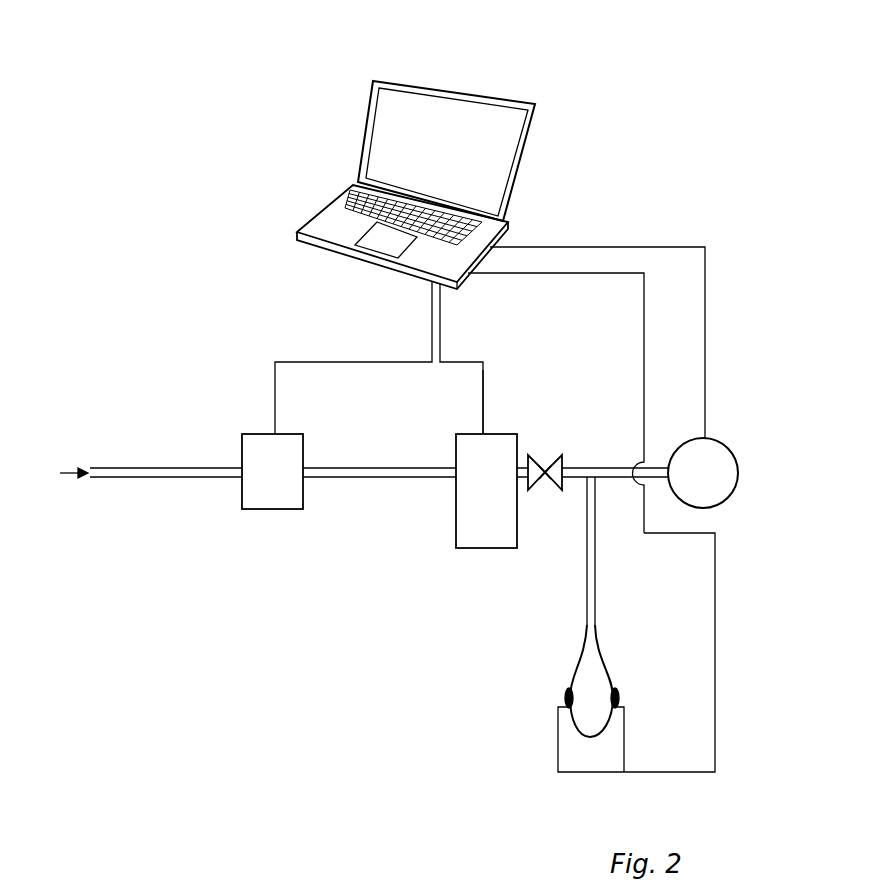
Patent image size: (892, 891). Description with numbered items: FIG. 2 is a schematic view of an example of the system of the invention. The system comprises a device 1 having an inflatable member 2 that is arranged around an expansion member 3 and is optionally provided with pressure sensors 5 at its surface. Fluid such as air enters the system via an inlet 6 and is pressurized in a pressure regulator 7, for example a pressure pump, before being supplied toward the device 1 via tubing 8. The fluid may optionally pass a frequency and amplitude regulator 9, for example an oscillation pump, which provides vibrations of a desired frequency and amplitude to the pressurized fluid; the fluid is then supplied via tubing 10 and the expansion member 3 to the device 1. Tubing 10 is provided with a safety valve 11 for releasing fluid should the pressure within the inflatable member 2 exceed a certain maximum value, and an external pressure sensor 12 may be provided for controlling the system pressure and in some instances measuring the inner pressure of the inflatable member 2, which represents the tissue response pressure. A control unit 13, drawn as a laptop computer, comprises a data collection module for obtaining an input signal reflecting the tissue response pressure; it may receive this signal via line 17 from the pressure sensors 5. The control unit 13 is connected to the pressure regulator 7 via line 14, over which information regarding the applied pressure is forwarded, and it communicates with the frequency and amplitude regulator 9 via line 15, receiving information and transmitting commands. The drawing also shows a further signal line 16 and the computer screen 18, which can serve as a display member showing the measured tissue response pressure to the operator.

The device 1 is at (542, 747).
The inflatable member 2 is at (583, 672).
The expansion member 3 is at (592, 565).
The pressure sensors 5 is at (618, 700).
The inlet 6 is at (150, 478).
The pressure regulator 7 is at (265, 499).
The tubing 8 is at (368, 470).
The frequency and amplitude regulator 9 is at (483, 538).
The tubing 10 is at (571, 470).
The safety valve 11 is at (547, 482).
The external pressure sensor 12 is at (708, 467).
The control unit 13 is at (416, 154).
The line 14 is at (348, 362).
The line 15 is at (483, 385).
The signal line 16 is at (638, 246).
The line 17 is at (715, 648).
The display 18 is at (440, 115).